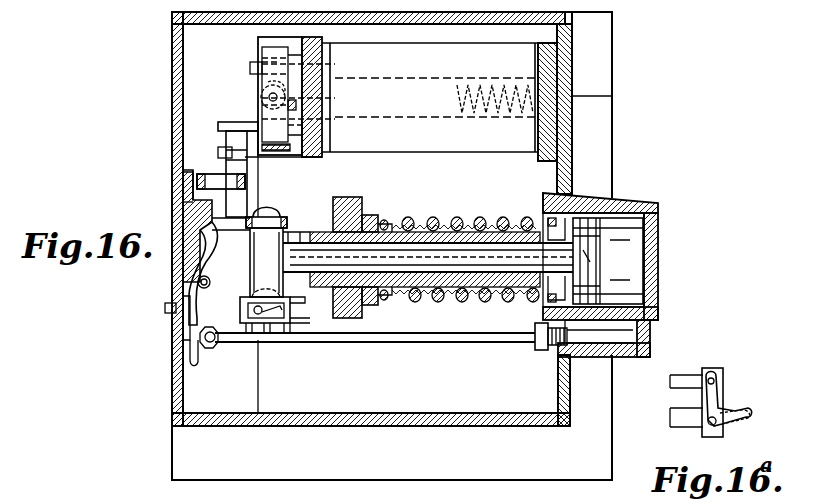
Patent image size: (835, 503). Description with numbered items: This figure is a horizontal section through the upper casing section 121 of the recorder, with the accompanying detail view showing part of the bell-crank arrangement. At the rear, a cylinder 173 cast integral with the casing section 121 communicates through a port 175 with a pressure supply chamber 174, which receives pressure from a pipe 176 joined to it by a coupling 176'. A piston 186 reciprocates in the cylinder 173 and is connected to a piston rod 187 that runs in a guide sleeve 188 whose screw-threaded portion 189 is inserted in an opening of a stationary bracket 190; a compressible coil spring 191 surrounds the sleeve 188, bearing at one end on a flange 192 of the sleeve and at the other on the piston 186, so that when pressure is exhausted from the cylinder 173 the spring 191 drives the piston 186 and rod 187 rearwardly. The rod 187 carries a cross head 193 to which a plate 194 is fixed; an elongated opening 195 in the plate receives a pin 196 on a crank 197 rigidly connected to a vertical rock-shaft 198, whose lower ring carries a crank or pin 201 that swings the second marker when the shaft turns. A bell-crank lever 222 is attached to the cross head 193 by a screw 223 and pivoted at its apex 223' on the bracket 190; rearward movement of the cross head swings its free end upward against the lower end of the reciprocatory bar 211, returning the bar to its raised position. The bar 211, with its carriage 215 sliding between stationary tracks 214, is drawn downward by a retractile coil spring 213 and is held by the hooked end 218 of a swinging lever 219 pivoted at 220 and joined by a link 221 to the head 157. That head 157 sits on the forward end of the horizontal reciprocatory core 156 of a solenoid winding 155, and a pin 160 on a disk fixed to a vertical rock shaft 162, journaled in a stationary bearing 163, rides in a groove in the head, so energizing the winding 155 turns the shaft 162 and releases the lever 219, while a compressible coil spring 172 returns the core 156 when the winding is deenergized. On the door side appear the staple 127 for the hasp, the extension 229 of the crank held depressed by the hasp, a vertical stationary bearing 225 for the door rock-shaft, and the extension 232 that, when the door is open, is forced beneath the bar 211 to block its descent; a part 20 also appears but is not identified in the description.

In FIG. 16, the valve 20 is at (226, 122).
In FIG. 16, the upper casing section 121 is at (460, 427).
In FIG. 16, the staple 127 is at (172, 318).
In FIG. 16, the solenoid winding 155 is at (439, 102).
In FIG. 16, the reciprocatory core 156 is at (446, 120).
In FIG. 16, the head 157 is at (272, 66).
In FIG. 16, the pin 160 is at (254, 68).
In FIG. 16, the vertical rock shaft 162 is at (262, 90).
In FIG. 16, the stationary bearing 163 is at (262, 105).
In FIG. 16, the compressible coil spring 172 is at (588, 99).
In FIG. 16, the cylinder 173 is at (622, 204).
In FIG. 16, the pressure supply chamber 174 is at (652, 341).
In FIG. 16, the port 175 is at (655, 314).
In FIG. 16, the pipe 176 is at (375, 348).
In FIG. 16, the coupling 176' is at (566, 350).
In FIG. 16, the piston 186 is at (603, 266).
In FIG. 16, the piston rod 187 is at (452, 255).
In FIG. 16A, the piston rod 187 is at (680, 378).
In FIG. 16, the guide sleeve 188 is at (438, 222).
In FIG. 16, the screw-threaded portion 189 is at (300, 217).
In FIG. 16, the stationary bracket 190 is at (346, 197).
In FIG. 16A, the stationary bracket 190 is at (682, 424).
In FIG. 16, the compressible coil spring 191 is at (462, 300).
In FIG. 16, the flange 192 is at (374, 214).
In FIG. 16, the cross head 193 is at (283, 240).
In FIG. 16A, the cross head 193 is at (726, 392).
In FIG. 16, the plate 194 is at (292, 336).
In FIG. 16, the elongated opening 195 is at (270, 342).
In FIG. 16, the pin 196 is at (240, 312).
In FIG. 16, the crank 197 is at (248, 340).
In FIG. 16, the vertical rock-shaft 198 is at (266, 290).
In FIG. 16, the crank or pin 201 is at (298, 300).
In FIG. 16, the reciprocatory bar 211 is at (206, 219).
In FIG. 16, the retractile coil spring 213 is at (207, 282).
In FIG. 16, the stationary tracks 214 is at (182, 179).
In FIG. 16, the carriage 215 is at (183, 216).
In FIG. 16, the hooked end 218 is at (205, 170).
In FIG. 16, the swinging lever 219 is at (232, 158).
In FIG. 16, the pivot 220 is at (224, 172).
In FIG. 16, the link 221 is at (290, 130).
In FIG. 16, the bell-crank lever 222 is at (195, 248).
In FIG. 16A, the bell-crank lever 222 is at (738, 422).
In FIG. 16, the screw 223 is at (266, 199).
In FIG. 16A, the screw 223 is at (729, 385).
In FIG. 16A, the pivot 223' is at (714, 438).
In FIG. 16, the vertical stationary bearing 225 is at (209, 362).
In FIG. 16, the extension 229 is at (166, 308).
In FIG. 16, the extension 232 is at (213, 273).